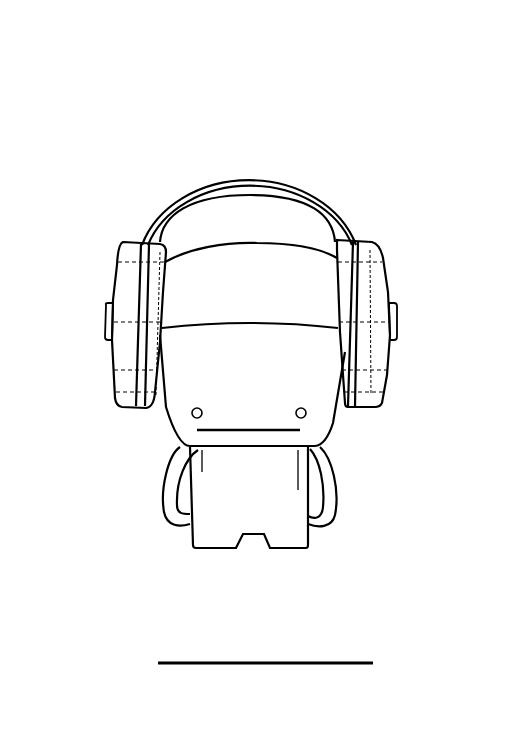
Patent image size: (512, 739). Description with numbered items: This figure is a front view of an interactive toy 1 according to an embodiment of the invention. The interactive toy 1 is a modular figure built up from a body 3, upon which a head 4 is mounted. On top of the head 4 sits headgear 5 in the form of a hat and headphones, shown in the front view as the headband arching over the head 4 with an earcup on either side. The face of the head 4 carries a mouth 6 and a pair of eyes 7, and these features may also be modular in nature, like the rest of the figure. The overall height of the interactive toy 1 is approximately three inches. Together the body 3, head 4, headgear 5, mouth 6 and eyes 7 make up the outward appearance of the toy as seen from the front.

The interactive toy 1 is at (391, 162).
The body 3 is at (277, 488).
The head 4 is at (192, 380).
The headgear 5 is at (368, 290).
The mouth 6 is at (228, 432).
The eyes 7 is at (307, 413).